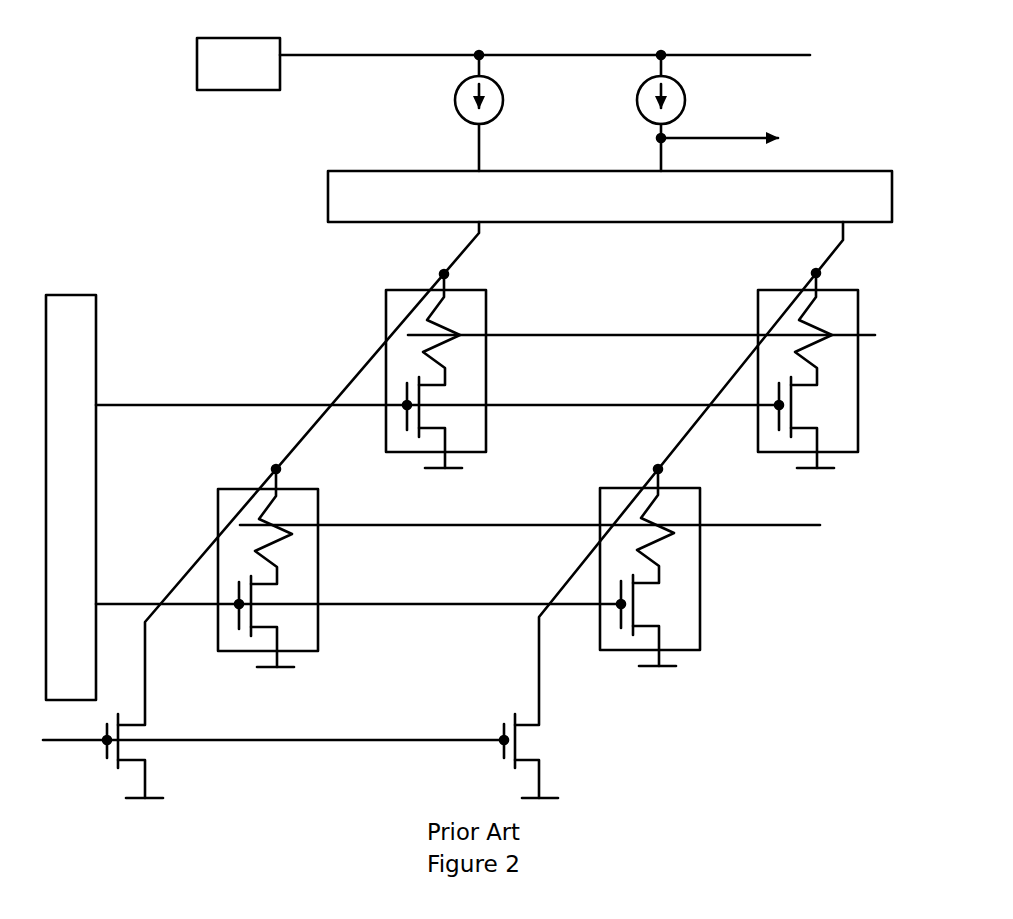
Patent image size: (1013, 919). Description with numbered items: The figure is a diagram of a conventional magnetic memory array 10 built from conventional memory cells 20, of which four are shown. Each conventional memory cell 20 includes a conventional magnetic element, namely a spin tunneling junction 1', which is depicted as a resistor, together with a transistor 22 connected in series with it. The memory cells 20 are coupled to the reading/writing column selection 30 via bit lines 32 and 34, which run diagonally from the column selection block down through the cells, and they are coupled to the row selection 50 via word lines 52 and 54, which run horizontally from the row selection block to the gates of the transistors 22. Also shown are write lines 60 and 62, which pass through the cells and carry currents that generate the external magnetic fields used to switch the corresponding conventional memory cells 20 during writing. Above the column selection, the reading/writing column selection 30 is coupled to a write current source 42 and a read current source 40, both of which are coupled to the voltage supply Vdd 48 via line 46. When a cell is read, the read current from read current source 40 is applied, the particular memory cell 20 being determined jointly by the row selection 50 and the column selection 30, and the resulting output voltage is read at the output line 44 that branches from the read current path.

The conventional memory array 10 is at (491, 33).
The spin tunneling junction 1' is at (564, 412).
The conventional memory cell 20 is at (386, 292).
The transistor 22 is at (460, 390).
The reading/writing column selection 30 is at (328, 203).
The bit line 32 is at (337, 393).
The bit line 34 is at (715, 395).
The read current source 40 is at (637, 97).
The write current source 42 is at (455, 100).
The output line 44 is at (693, 138).
The line 46 is at (760, 55).
The voltage supply Vdd 48 is at (230, 90).
The row selection 50 is at (96, 323).
The word line 52 is at (440, 603).
The word line 54 is at (128, 405).
The write line 60 is at (575, 335).
The write line 62 is at (412, 525).